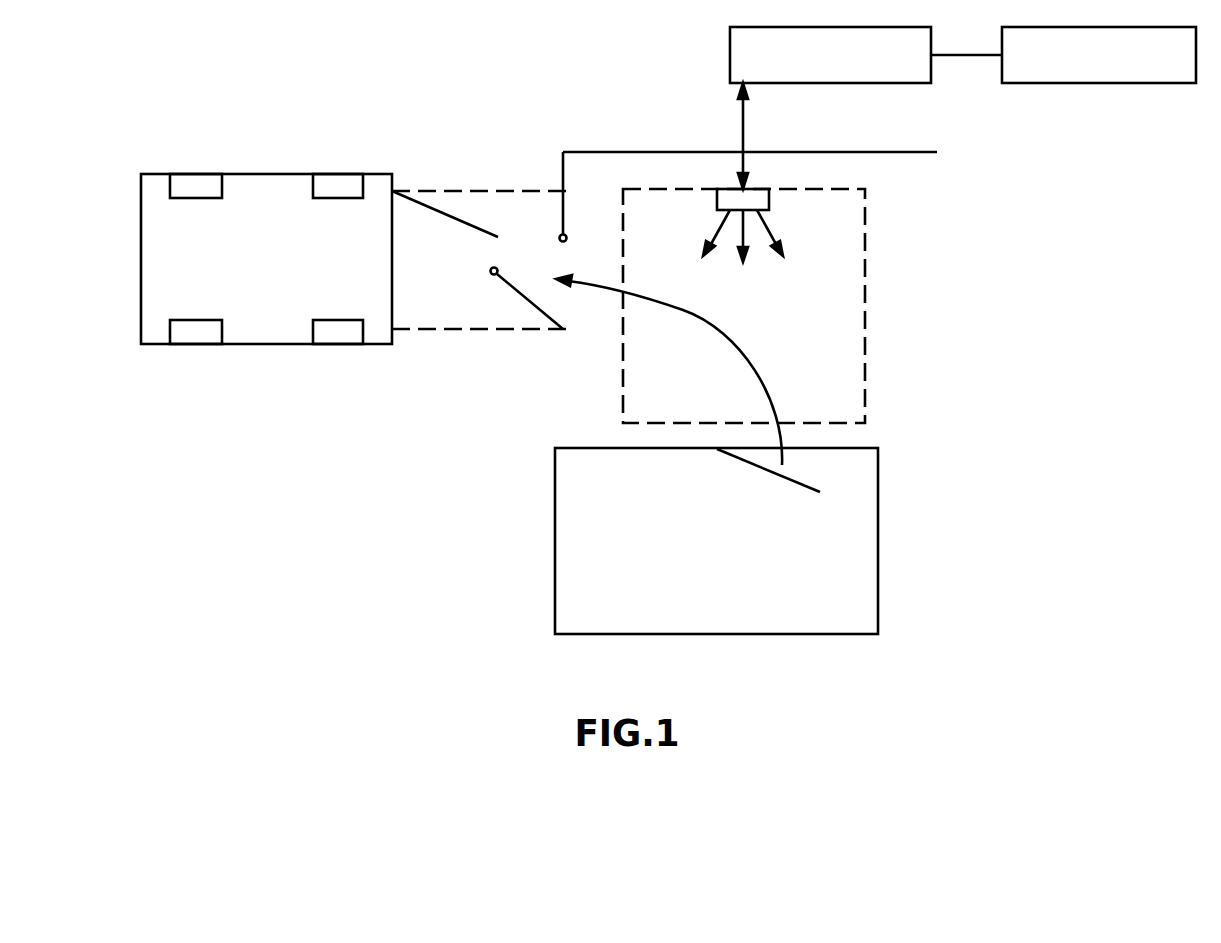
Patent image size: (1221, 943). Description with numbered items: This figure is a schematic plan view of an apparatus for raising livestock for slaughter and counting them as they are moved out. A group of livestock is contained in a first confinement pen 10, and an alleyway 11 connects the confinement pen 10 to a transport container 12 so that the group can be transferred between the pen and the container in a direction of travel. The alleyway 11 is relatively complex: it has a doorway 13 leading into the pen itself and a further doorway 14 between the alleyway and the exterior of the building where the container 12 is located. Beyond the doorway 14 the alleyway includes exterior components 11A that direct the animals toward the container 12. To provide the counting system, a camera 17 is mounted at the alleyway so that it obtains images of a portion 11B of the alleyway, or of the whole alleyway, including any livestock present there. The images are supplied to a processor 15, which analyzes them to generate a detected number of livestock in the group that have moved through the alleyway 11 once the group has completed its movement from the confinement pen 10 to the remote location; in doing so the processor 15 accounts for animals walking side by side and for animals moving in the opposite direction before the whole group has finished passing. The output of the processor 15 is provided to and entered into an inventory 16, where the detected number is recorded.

The confinement pen 10 is at (868, 488).
The alleyway 11 is at (852, 310).
The exterior components 11A is at (457, 191).
The portion of the alleyway 11B is at (865, 249).
The container 12 is at (248, 180).
The doorway 13 is at (800, 488).
The doorway 14 is at (517, 293).
The processor 15 is at (730, 52).
The inventory 16 is at (1132, 83).
The camera 17 is at (757, 197).